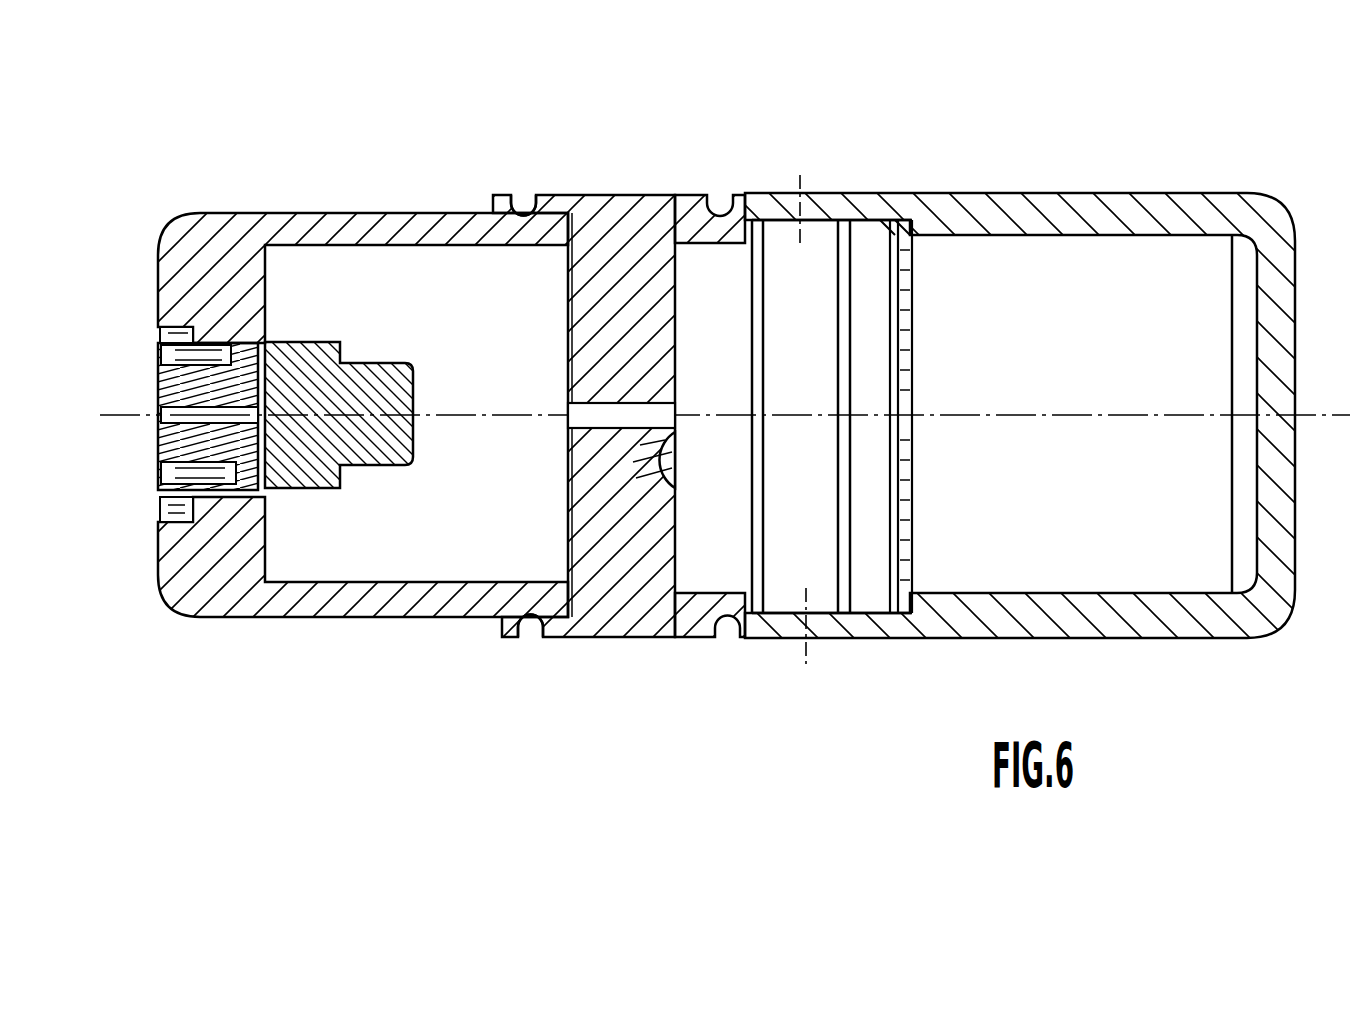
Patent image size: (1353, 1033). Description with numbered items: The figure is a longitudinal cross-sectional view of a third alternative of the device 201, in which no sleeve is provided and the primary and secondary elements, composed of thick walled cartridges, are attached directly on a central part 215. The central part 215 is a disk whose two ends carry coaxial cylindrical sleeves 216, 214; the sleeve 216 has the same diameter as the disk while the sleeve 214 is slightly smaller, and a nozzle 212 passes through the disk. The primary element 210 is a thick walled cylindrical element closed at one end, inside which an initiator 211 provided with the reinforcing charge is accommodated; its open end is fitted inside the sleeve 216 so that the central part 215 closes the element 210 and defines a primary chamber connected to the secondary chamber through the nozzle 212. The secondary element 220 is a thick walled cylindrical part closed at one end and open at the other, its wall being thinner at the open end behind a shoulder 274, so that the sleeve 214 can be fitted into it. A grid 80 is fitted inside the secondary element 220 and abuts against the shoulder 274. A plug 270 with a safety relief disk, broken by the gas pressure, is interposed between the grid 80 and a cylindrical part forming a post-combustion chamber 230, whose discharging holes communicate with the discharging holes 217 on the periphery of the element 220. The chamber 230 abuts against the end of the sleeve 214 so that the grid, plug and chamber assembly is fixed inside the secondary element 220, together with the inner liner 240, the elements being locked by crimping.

The cartridge assembly 201 is at (458, 660).
The primary element 210 is at (325, 223).
The initiator 211 is at (162, 452).
The nozzle 212 is at (655, 486).
The sleeve 214 is at (698, 195).
The central part 215 is at (620, 235).
The sleeve 216 is at (547, 190).
The discharging holes 217 is at (803, 195).
The secondary element 220 is at (1028, 226).
The post-combustion chamber 230 is at (790, 575).
The liner 240 is at (1157, 283).
The plug 270 is at (872, 632).
The shoulder 274 is at (922, 223).
The grid 80 is at (912, 315).